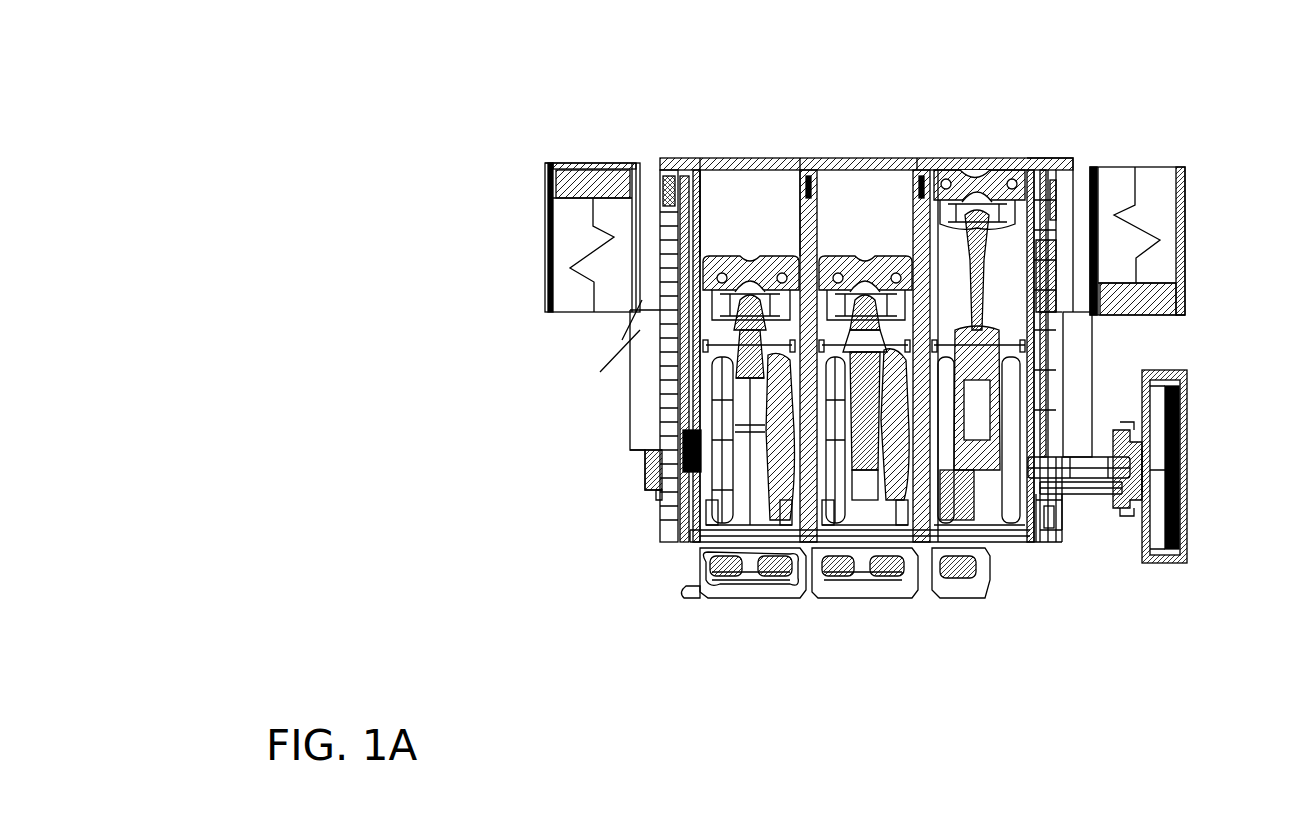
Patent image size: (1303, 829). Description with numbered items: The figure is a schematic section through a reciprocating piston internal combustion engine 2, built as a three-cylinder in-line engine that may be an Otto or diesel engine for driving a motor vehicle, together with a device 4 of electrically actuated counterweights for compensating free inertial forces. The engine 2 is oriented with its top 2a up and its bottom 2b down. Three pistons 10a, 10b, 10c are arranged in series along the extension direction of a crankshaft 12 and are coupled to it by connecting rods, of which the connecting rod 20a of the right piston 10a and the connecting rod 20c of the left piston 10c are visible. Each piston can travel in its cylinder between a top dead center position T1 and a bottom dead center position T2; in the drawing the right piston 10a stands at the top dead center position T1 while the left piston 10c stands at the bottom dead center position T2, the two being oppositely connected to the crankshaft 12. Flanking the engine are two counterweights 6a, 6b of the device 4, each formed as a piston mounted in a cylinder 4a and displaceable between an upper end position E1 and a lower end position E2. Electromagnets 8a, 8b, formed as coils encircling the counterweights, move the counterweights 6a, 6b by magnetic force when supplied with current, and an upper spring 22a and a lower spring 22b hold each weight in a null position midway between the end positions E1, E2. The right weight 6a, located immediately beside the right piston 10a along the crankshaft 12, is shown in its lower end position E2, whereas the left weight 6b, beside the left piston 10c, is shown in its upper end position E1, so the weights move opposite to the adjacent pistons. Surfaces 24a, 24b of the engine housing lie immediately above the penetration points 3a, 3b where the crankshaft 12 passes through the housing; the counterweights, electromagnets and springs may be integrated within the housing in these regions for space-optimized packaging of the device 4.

The reciprocating piston internal combustion engine 2 is at (758, 80).
The top of engine 2a is at (868, 118).
The bottom of engine 2b is at (957, 622).
The penetration point of crankshaft 3a is at (1080, 497).
The penetration point of crankshaft 3b is at (655, 492).
The device for compensating free inertial forces 4 is at (588, 116).
The cylinders 4a is at (862, 239).
The right counterweight 6a is at (1186, 302).
The left counterweight 6b is at (546, 198).
The electromagnet 8a is at (1186, 250).
The electromagnet 8b is at (548, 252).
The right piston 10a is at (1005, 165).
The middle piston 10b is at (900, 257).
The left piston 10c is at (785, 257).
The crankshaft 12 is at (645, 470).
The connecting rod 20a is at (1063, 318).
The connecting rod 20c is at (660, 424).
The upper spring 22a is at (1165, 190).
The lower spring 22b is at (563, 286).
The surface of engine housing 24a is at (1082, 392).
The surface of engine housing 24b is at (874, 596).
The upper end position E1 is at (621, 137).
The lower end position E2 is at (1178, 306).
The top dead center position T1 is at (1013, 133).
The bottom dead center position T2 is at (630, 300).